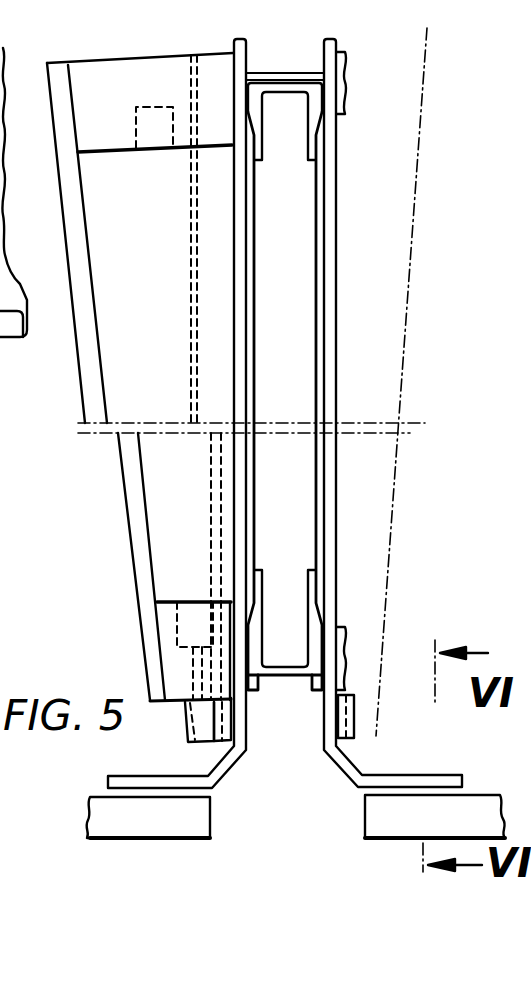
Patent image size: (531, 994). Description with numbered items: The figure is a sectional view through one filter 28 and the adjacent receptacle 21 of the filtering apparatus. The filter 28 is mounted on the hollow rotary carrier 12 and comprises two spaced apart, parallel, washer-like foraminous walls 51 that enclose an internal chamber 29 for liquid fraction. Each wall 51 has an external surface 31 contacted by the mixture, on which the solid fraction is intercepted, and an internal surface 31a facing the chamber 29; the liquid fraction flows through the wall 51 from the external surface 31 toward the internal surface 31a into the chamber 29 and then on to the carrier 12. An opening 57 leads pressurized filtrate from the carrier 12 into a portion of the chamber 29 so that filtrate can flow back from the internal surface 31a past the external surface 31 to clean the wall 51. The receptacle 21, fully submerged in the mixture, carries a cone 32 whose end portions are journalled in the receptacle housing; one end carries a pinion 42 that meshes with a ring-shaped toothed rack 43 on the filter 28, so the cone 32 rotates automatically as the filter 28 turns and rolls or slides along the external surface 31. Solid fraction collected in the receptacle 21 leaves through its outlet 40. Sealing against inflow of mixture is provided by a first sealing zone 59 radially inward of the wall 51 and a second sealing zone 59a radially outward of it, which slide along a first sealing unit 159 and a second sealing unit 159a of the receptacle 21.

The carrier 12 is at (130, 819).
The receptacle 21 is at (88, 390).
The filter 28 is at (331, 377).
The internal chamber 29 is at (283, 281).
The external surface 31 is at (233, 232).
The internal surface 31a is at (247, 319).
The cone 32 is at (172, 512).
The outlet 40 is at (0, 36).
The pinion 42 is at (202, 719).
The ring-shaped toothed rack 43 is at (230, 722).
The foraminous wall 51 is at (232, 288).
The opening 57 is at (285, 460).
The first sealing zone 59 is at (336, 663).
The second sealing zone 59a is at (330, 93).
The first sealing unit 159 is at (342, 632).
The second sealing unit 159a is at (345, 54).